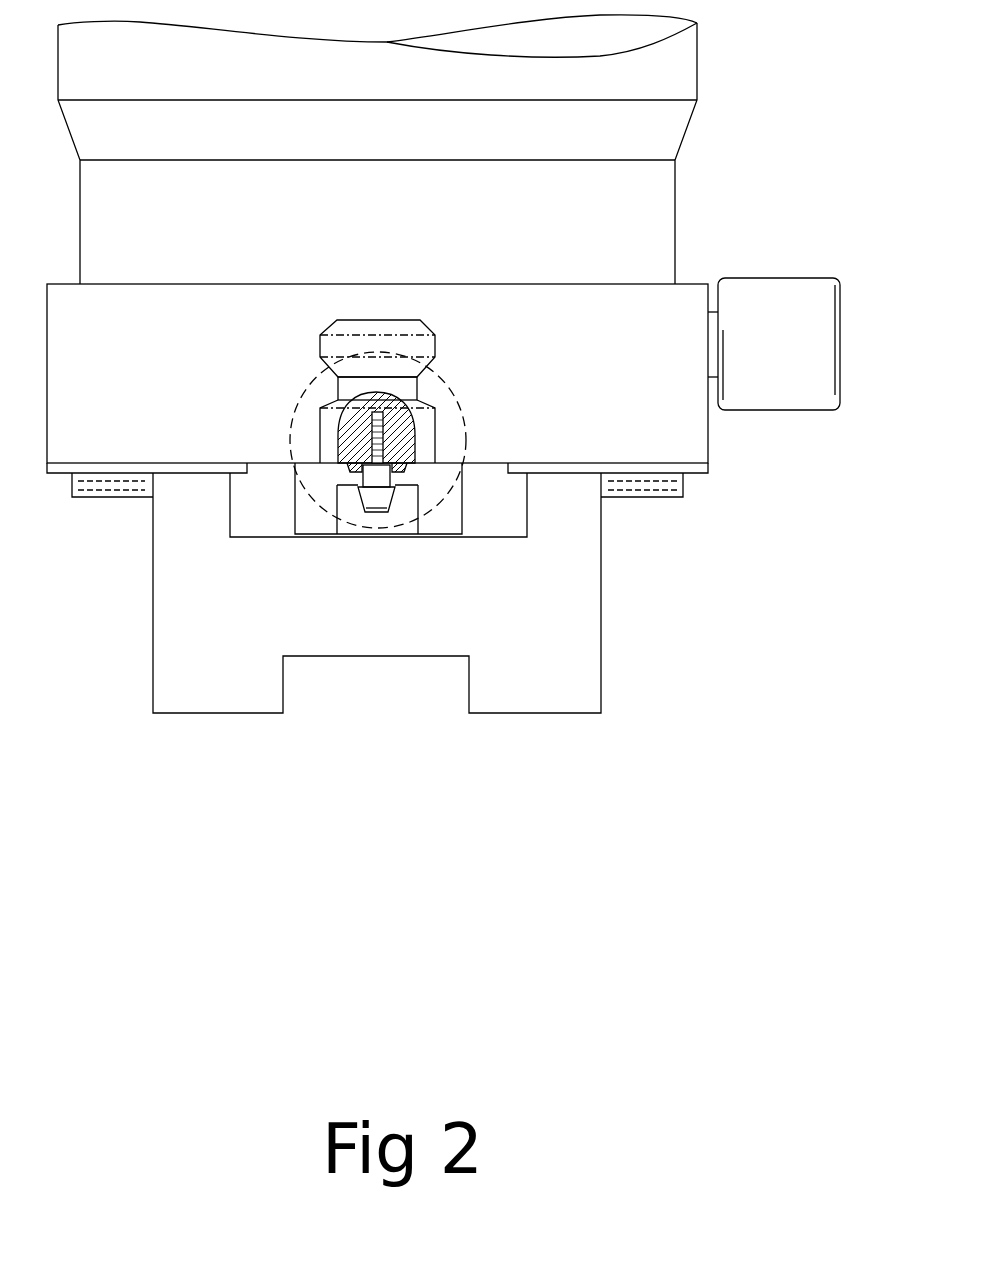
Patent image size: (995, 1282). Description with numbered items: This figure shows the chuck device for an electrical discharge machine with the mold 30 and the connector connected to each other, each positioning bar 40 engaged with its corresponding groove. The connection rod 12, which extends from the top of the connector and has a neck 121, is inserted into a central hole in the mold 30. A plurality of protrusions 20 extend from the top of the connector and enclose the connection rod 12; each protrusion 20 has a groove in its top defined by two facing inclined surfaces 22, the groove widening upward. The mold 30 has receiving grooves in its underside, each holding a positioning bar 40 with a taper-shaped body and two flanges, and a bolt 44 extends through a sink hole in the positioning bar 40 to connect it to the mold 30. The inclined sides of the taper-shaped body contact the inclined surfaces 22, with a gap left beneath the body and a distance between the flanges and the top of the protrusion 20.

The connection rod 12 is at (403, 343).
The neck 121 is at (412, 393).
The protrusion 20 is at (405, 517).
The inclined surface 22 is at (368, 498).
The mold 30 is at (628, 315).
The positioning bar 40 is at (405, 452).
The bolt 44 is at (338, 460).